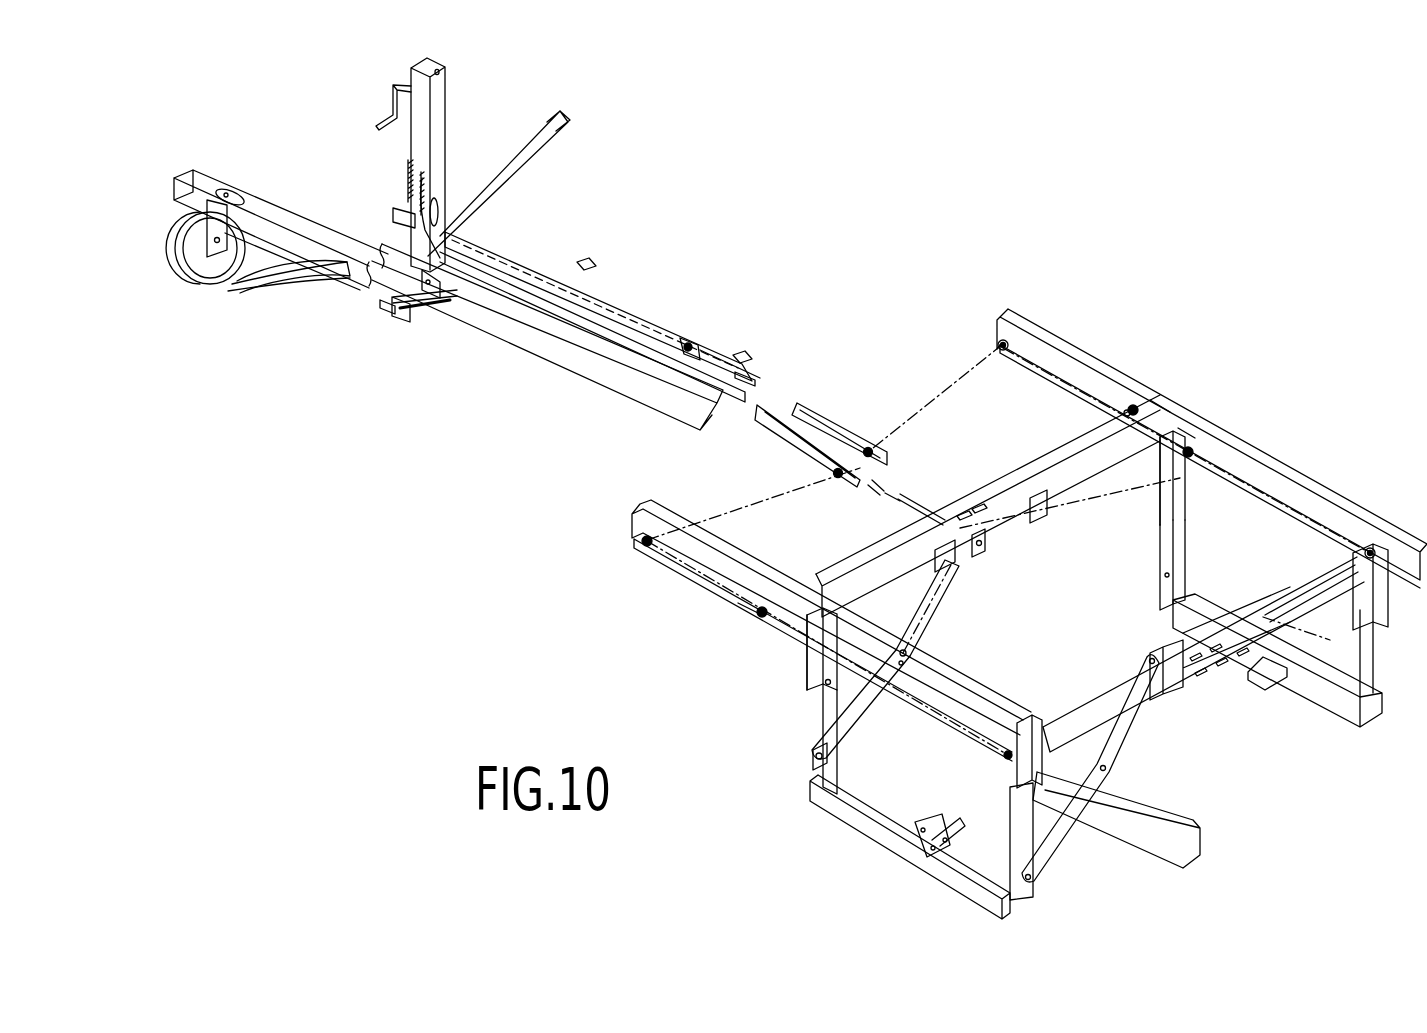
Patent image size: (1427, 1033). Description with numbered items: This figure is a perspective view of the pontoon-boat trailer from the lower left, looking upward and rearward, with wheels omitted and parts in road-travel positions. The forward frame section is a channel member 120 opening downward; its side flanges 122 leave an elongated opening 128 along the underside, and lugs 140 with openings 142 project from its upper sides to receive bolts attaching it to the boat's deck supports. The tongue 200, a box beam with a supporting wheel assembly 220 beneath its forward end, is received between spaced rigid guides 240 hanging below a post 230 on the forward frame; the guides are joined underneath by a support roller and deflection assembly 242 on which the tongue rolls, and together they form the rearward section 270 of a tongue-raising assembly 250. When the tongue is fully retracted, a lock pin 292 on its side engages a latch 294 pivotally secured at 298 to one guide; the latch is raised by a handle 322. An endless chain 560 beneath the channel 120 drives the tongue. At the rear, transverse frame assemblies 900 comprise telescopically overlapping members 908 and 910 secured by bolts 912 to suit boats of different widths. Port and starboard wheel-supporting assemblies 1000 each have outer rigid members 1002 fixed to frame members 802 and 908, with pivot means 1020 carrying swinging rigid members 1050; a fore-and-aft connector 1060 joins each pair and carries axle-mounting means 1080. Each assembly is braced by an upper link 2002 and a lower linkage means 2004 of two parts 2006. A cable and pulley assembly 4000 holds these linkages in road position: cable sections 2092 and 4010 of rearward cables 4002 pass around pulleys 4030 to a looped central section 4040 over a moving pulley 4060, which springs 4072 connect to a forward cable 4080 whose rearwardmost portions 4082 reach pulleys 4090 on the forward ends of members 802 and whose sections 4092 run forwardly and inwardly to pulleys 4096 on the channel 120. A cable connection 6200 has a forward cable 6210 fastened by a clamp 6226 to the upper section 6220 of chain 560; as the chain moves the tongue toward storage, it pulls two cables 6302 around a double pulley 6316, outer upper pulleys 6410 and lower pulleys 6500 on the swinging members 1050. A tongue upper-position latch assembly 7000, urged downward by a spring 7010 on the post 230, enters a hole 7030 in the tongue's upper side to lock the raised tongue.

The channel member 120 is at (754, 389).
The side flanges 122 is at (661, 320).
The elongated opening 128 is at (770, 437).
The lugs 140 is at (580, 268).
The openings 142 is at (745, 376).
The tongue 200 is at (241, 190).
The supporting wheel assembly 220 is at (367, 303).
The post 230 is at (447, 88).
The rigid guides 240 is at (398, 220).
The support roller and deflection assembly 242 is at (418, 312).
The tongue-raising assembly 250 is at (273, 291).
The rearward section 270 is at (398, 331).
The lock pin 292 is at (447, 312).
The latch 294 is at (458, 292).
The pivot means 298 is at (390, 308).
The handle 322 is at (427, 176).
The endless chain 560 is at (631, 304).
The longitudinal trailer frame members 802 is at (717, 547).
The transversely extending frame assemblies 900 is at (829, 567).
The transverse frame member 908 is at (873, 547).
The transverse frame member 910 is at (1073, 443).
The bolts 912 is at (978, 508).
The wheel-supporting assemblies 1000 is at (796, 685).
The outer rigid member 1002 is at (805, 665).
The pivot means 1020 is at (826, 687).
The swinging rigid members 1050 is at (823, 723).
The connector 1060 is at (853, 786).
The axle-mounting means 1080 is at (942, 820).
The upper link 2002 is at (927, 618).
The lower linkage means 2004 is at (860, 727).
The parts 2006 is at (909, 663).
The cable section 2092 is at (1070, 503).
The cable and pulley assembly 4000 is at (918, 404).
The rearward cables 4002 is at (740, 606).
The cable section 4010 is at (1330, 614).
The pulleys 4030 is at (1195, 451).
The central section 4040 is at (1162, 406).
The moving pulley 4060 is at (1122, 413).
The springs 4072 is at (752, 620).
The forward cable 4080 is at (963, 373).
The rearwardmost portions 4082 is at (693, 572).
The pulleys 4090 is at (645, 543).
The cable sections 4092 is at (905, 423).
The pulleys 4096 is at (832, 473).
The cable connection 6200 is at (880, 488).
The forward cable 6210 is at (897, 495).
The upper section 6220 is at (524, 243).
The clamp 6226 is at (688, 343).
The cables 6302 is at (933, 517).
The pulley 6316 is at (980, 546).
The outer upper pulleys 6410 is at (950, 562).
The lower pulleys 6500 is at (813, 761).
The tongue upper position latch assembly 7000 is at (400, 161).
The spring 7010 is at (406, 178).
The hole 7030 is at (249, 191).